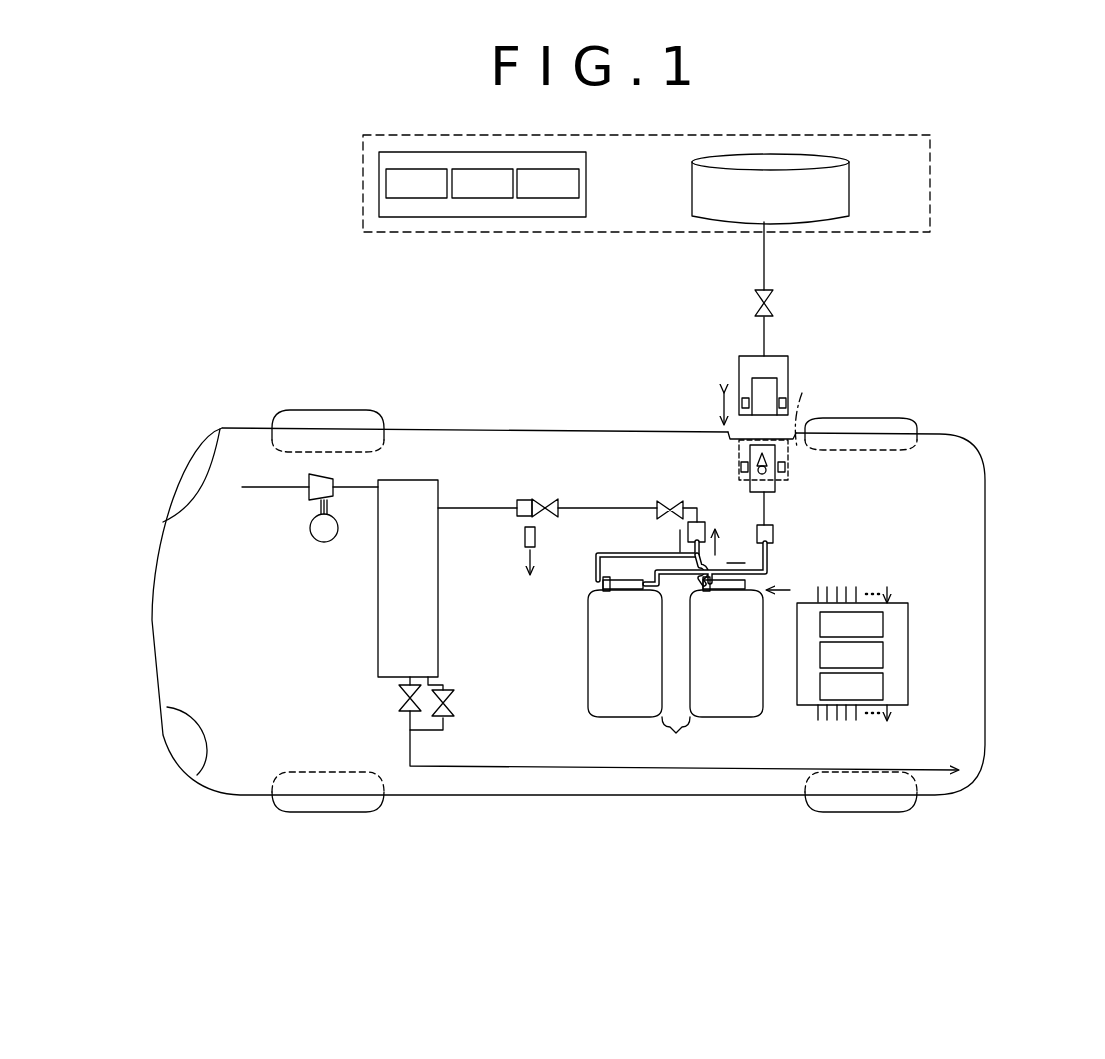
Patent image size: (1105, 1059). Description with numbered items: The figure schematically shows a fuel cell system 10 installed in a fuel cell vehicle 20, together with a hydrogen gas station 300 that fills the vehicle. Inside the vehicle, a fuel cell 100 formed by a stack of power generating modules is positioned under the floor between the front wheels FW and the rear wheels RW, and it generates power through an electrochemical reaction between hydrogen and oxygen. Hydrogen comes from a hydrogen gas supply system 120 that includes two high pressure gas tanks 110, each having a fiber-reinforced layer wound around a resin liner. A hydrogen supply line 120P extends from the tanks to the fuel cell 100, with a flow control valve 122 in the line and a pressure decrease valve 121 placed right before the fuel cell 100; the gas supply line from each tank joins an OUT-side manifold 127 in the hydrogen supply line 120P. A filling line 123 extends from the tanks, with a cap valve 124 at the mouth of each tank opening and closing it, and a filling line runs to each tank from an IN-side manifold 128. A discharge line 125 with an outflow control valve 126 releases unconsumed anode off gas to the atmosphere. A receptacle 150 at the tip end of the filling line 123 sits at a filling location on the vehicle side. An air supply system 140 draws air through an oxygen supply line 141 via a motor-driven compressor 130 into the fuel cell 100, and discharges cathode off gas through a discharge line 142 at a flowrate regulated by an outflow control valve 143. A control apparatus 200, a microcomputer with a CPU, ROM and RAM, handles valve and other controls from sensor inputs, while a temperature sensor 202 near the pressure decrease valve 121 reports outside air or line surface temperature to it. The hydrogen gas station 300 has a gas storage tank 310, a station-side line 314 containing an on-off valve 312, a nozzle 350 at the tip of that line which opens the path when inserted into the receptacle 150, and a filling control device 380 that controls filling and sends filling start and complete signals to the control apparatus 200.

The fuel cell system 10 is at (938, 311).
The fuel cell vehicle 20 is at (520, 428).
The fuel cell 100 is at (437, 480).
The high pressure gas tanks 110 is at (675, 667).
The hydrogen gas supply system 120 is at (687, 451).
The hydrogen supply line 120P is at (452, 508).
The pressure decrease valve 121 is at (541, 499).
The flow control valve 122 is at (670, 500).
The filling line 123 is at (760, 510).
The cap valve 124 is at (703, 583).
The discharge line 125 is at (440, 685).
The outflow control valve 126 is at (455, 705).
The OUT-side manifold 127 is at (688, 528).
The IN-side manifold 128 is at (775, 533).
The compressor 130 is at (334, 478).
The air supply system 140 is at (297, 511).
The oxygen supply line 141 is at (258, 487).
The discharge line 142 is at (455, 768).
The outflow control valve 143 is at (398, 703).
The receptacle 150 is at (776, 475).
The control apparatus 200 is at (908, 625).
The temperature sensor 202 is at (525, 538).
The hydrogen gas station 300 is at (910, 135).
The gas storage tank 310 is at (835, 193).
The on-off valve 312 is at (756, 302).
The station-side line 314 is at (764, 270).
The nozzle 350 is at (788, 378).
The filling control device 380 is at (586, 173).
The front wheels FW is at (362, 410).
The rear wheels RW is at (890, 418).